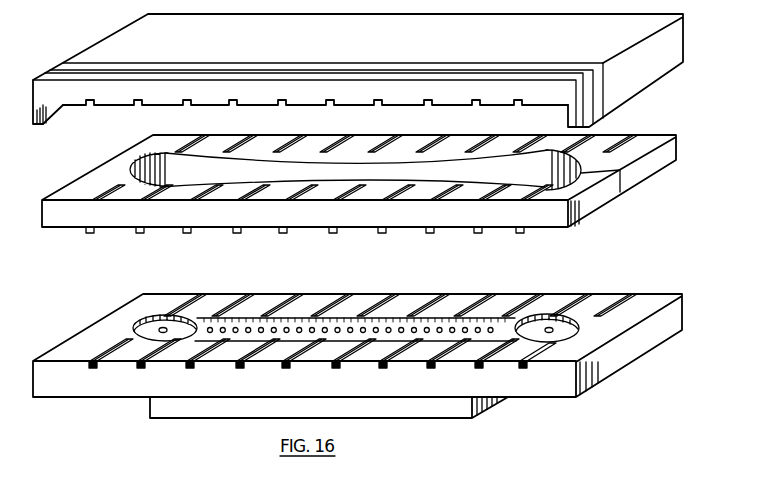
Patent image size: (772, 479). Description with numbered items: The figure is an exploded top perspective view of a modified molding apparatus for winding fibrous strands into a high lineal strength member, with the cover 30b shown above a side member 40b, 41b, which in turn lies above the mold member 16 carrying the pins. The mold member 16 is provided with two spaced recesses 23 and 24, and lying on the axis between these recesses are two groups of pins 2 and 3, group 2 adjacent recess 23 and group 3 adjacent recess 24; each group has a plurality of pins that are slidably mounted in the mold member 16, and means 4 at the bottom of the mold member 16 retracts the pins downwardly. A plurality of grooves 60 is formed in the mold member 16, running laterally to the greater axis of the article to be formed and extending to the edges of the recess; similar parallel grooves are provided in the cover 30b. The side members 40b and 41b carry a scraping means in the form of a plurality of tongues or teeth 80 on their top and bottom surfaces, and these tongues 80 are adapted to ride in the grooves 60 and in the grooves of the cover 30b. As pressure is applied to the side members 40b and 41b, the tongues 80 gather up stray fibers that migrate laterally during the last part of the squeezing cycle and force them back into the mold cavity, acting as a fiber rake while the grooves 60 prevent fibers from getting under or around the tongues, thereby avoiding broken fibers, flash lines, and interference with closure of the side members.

The cover 30b is at (91, 42).
The side member 40b is at (78, 183).
The side member 41b is at (122, 157).
The tongues 80 is at (292, 134).
The lower plate 16 is at (531, 400).
The recess 23 is at (157, 316).
The recess 24 is at (579, 327).
The group of pins 2 is at (204, 318).
The group of pins 3 is at (487, 317).
The grooves 60 is at (186, 367).
The means for retracting the pins 4 is at (449, 419).